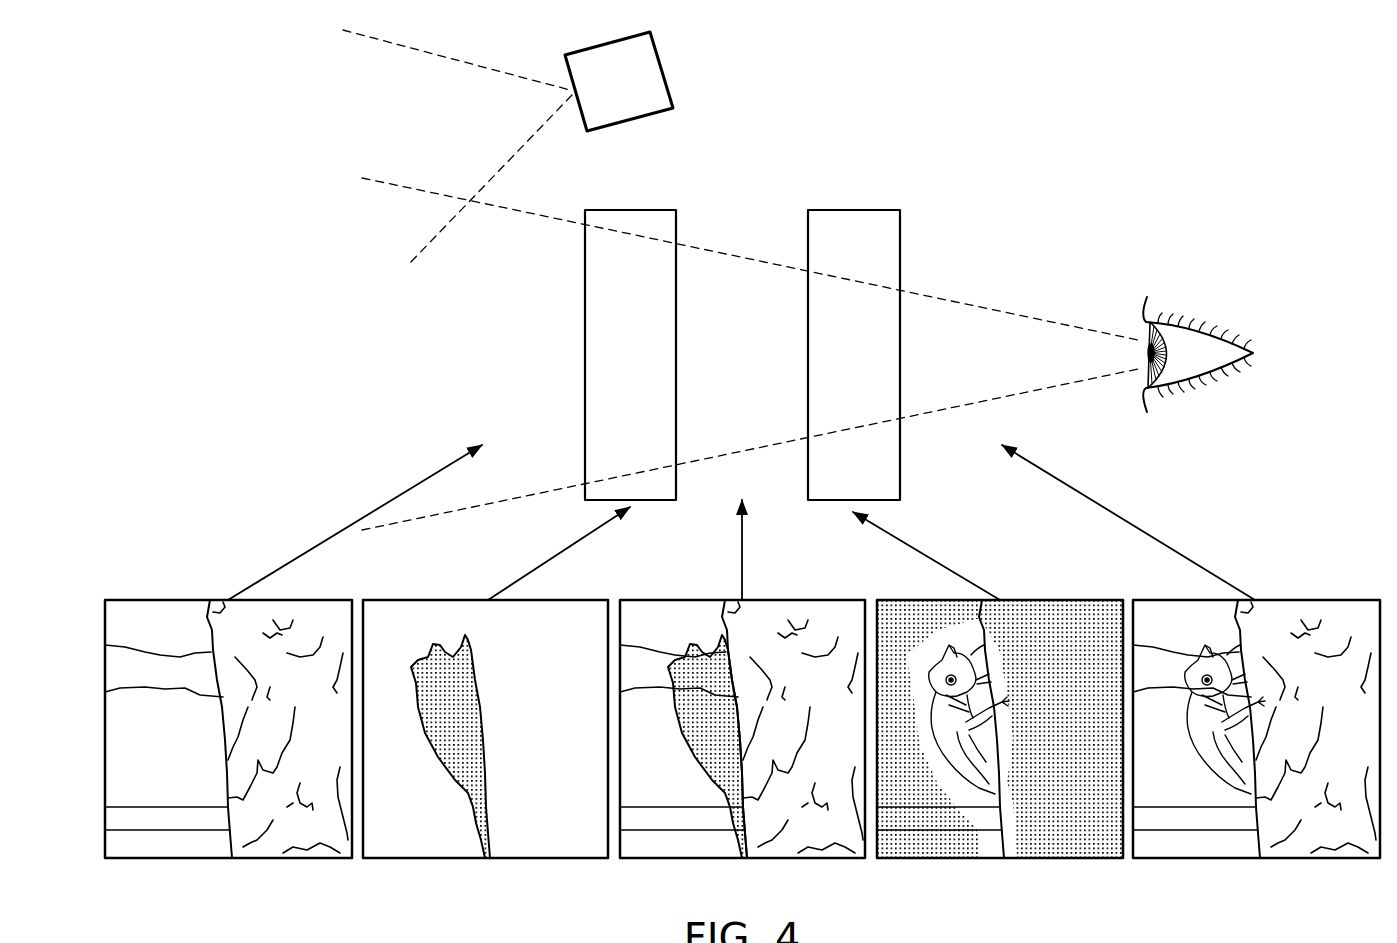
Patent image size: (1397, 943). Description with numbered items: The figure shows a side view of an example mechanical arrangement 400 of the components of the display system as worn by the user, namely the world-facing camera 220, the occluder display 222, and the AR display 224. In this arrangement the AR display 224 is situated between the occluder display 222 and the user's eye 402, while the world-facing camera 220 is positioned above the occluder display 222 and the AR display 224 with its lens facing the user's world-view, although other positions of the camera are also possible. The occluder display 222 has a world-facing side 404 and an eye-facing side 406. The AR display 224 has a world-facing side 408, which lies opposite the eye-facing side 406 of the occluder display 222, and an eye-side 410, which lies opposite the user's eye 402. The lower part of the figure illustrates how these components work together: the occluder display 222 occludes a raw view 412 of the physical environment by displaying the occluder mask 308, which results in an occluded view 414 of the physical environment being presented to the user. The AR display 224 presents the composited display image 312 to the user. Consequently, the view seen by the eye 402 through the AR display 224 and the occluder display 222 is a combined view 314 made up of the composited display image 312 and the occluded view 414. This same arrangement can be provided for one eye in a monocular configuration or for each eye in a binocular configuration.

The world-facing camera 220 is at (663, 68).
The occluder display 222 is at (631, 209).
The AR display 224 is at (853, 210).
The mechanical arrangement 400 is at (1086, 98).
The user's eye 402 is at (1228, 345).
The world-facing side 404 is at (576, 312).
The eye-facing side 406 is at (690, 374).
The world-facing side 408 is at (793, 333).
The eye-side 410 is at (912, 370).
The raw view 412 is at (182, 600).
The occluder mask 308 is at (452, 600).
The occluded view 414 is at (697, 600).
The composited display image 312 is at (1033, 600).
The combined view 314 is at (1322, 600).